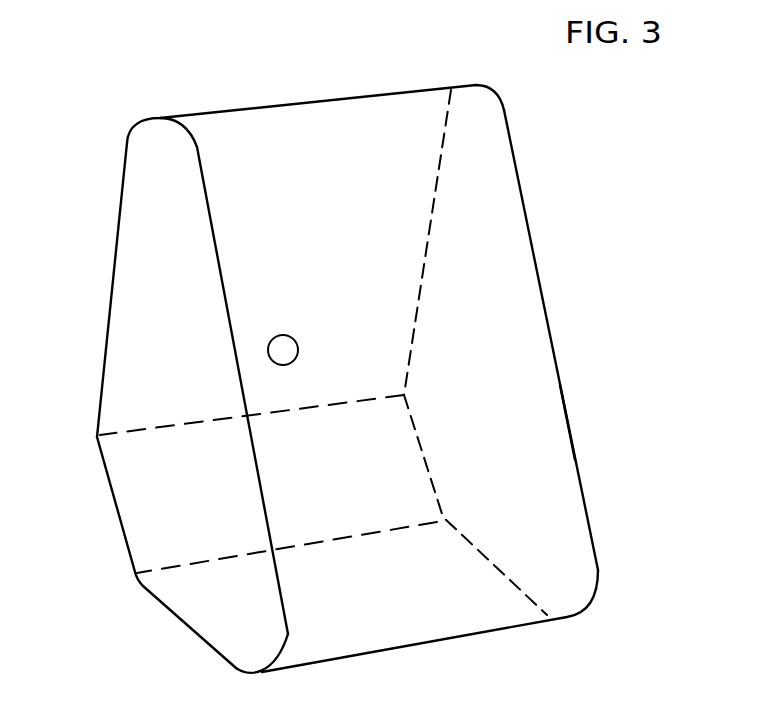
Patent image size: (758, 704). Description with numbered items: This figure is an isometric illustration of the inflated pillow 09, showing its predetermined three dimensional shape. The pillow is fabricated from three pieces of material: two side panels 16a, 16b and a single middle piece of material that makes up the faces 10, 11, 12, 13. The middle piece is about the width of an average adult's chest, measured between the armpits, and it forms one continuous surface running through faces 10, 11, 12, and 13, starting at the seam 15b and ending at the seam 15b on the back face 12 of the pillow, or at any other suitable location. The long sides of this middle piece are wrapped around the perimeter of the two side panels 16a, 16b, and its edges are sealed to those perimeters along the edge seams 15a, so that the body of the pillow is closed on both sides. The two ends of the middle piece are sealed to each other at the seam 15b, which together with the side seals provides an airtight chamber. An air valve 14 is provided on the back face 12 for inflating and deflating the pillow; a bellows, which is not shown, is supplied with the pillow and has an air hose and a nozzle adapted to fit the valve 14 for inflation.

The container body 09 is at (364, 82).
The face 10 is at (240, 624).
The face 11 is at (498, 247).
The back face 12 is at (235, 161).
The face 13 is at (173, 545).
The air valve 14 is at (262, 360).
The side wall 15a is at (122, 163).
The seam 15b is at (148, 437).
The side panel 16a is at (145, 273).
The side panel 16b is at (524, 456).